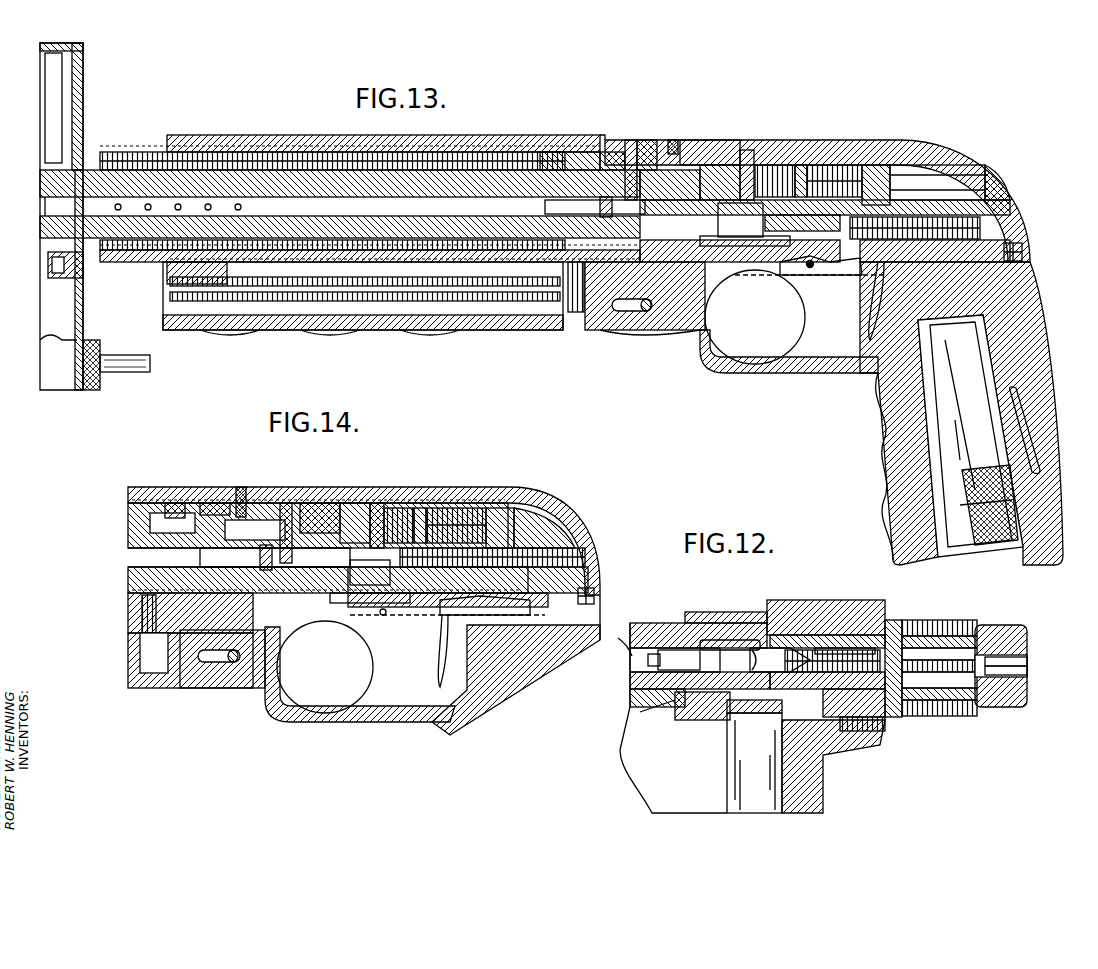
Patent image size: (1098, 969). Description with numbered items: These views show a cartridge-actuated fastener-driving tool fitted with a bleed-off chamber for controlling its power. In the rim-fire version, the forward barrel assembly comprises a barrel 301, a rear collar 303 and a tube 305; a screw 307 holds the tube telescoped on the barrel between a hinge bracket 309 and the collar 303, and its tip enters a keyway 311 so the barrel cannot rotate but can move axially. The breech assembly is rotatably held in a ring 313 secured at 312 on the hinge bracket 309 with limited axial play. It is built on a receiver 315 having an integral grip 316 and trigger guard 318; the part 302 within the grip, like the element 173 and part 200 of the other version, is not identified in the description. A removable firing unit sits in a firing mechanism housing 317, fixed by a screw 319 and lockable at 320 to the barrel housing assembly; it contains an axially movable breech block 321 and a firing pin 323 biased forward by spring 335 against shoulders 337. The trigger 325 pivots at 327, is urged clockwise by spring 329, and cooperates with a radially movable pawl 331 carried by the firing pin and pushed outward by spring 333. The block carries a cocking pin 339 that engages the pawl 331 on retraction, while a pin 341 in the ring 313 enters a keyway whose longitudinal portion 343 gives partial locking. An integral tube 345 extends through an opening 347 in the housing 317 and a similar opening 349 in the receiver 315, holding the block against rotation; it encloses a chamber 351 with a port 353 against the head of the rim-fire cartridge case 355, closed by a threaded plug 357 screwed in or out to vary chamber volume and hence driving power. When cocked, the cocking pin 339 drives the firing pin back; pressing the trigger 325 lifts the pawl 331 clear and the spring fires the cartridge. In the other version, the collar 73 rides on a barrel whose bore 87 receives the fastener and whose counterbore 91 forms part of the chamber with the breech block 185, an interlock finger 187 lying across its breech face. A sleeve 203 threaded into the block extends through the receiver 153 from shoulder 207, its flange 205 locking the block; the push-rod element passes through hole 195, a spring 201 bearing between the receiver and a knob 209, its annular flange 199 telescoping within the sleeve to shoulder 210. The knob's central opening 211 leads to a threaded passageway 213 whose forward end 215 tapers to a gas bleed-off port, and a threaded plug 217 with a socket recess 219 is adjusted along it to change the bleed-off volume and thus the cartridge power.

In FIG. 13, the barrel 301 is at (300, 170).
In FIG. 14, the barrel 301 is at (135, 540).
In FIG. 13, the magazine 302 is at (960, 318).
In FIG. 13, the rear collar 303 is at (560, 152).
In FIG. 14, the rear collar 303 is at (135, 605).
In FIG. 13, the tube 305 is at (488, 135).
In FIG. 14, the tube 305 is at (148, 487).
In FIG. 13, the screw 307 is at (578, 330).
In FIG. 14, the screw 307 is at (140, 648).
In FIG. 13, the hinge bracket 309 is at (640, 330).
In FIG. 14, the hinge bracket 309 is at (195, 688).
In FIG. 13, the keyway 311 is at (555, 222).
In FIG. 14, the keyway 311 is at (210, 558).
In FIG. 13, the securing connection 312 is at (650, 311).
In FIG. 14, the securing connection 312 is at (242, 662).
In FIG. 13, the ring 313 is at (660, 170).
In FIG. 14, the ring 313 is at (218, 503).
In FIG. 13, the receiver 315 is at (918, 140).
In FIG. 14, the receiver 315 is at (522, 490).
In FIG. 13, the grip 316 is at (1038, 370).
In FIG. 14, the firing mechanism housing 317 is at (420, 508).
In FIG. 13, the trigger guard 318 is at (748, 373).
In FIG. 14, the trigger guard 318 is at (318, 722).
In FIG. 13, the screw 319 is at (1024, 252).
In FIG. 14, the screw 319 is at (596, 596).
In FIG. 13, the lock 320 is at (610, 152).
In FIG. 14, the lock 320 is at (182, 503).
In FIG. 13, the breech block 321 is at (722, 150).
In FIG. 14, the breech block 321 is at (358, 503).
In FIG. 13, the firing pin 323 is at (762, 220).
In FIG. 14, the firing pin 323 is at (371, 572).
In FIG. 13, the trigger 325 is at (802, 320).
In FIG. 14, the trigger 325 is at (372, 666).
In FIG. 13, the pivot 327 is at (806, 268).
In FIG. 13, the trigger spring 329 is at (880, 300).
In FIG. 13, the pawl 331 is at (834, 265).
In FIG. 14, the pawl 331 is at (445, 616).
In FIG. 13, the pawl spring 333 is at (840, 165).
In FIG. 14, the pawl spring 333 is at (498, 508).
In FIG. 13, the firing pin spring 335 is at (965, 215).
In FIG. 14, the firing pin spring 335 is at (585, 560).
In FIG. 13, the shoulders 337 is at (770, 220).
In FIG. 13, the cocking pin 339 is at (710, 238).
In FIG. 14, the cocking pin 339 is at (395, 605).
In FIG. 13, the pin 341 is at (673, 140).
In FIG. 14, the pin 341 is at (241, 487).
In FIG. 13, the longitudinal keyway portion 343 is at (645, 140).
In FIG. 13, the integral tube 345 is at (778, 165).
In FIG. 14, the integral tube 345 is at (398, 508).
In FIG. 13, the opening 347 is at (905, 178).
In FIG. 13, the opening 349 is at (985, 168).
In FIG. 14, the opening 349 is at (575, 510).
In FIG. 13, the chamber 351 is at (748, 150).
In FIG. 14, the chamber 351 is at (378, 503).
In FIG. 13, the port 353 is at (695, 145).
In FIG. 14, the port 353 is at (330, 503).
In FIG. 13, the rim-fire cartridge case 355 is at (632, 140).
In FIG. 14, the rim-fire cartridge case 355 is at (287, 503).
In FIG. 13, the threaded plug 357 is at (803, 165).
In FIG. 14, the threaded plug 357 is at (452, 508).
In FIG. 12, the collar 73 is at (650, 697).
In FIG. 12, the bore 87 is at (640, 660).
In FIG. 12, the counterbore 91 is at (685, 648).
In FIG. 12, the receiver 153 is at (805, 600).
In FIG. 12, the frame 173 is at (668, 729).
In FIG. 12, the breech block 185 is at (694, 604).
In FIG. 12, the finger 187 is at (635, 685).
In FIG. 12, the hole 195 is at (758, 648).
In FIG. 12, the annular flange 199 is at (862, 731).
In FIG. 12, the housing 200 is at (882, 602).
In FIG. 12, the spring 201 is at (945, 636).
In FIG. 12, the sleeve 203 is at (862, 600).
In FIG. 12, the flange 205 is at (898, 620).
In FIG. 12, the shoulder 207 is at (835, 648).
In FIG. 12, the knob 209 is at (1005, 625).
In FIG. 12, the shoulder 210 is at (900, 700).
In FIG. 12, the central opening 211 is at (1028, 660).
In FIG. 12, the threaded passageway 213 is at (1028, 672).
In FIG. 12, the forward end of passageway 215 is at (755, 713).
In FIG. 12, the threaded plug 217 is at (905, 635).
In FIG. 12, the socket recess 219 is at (902, 640).